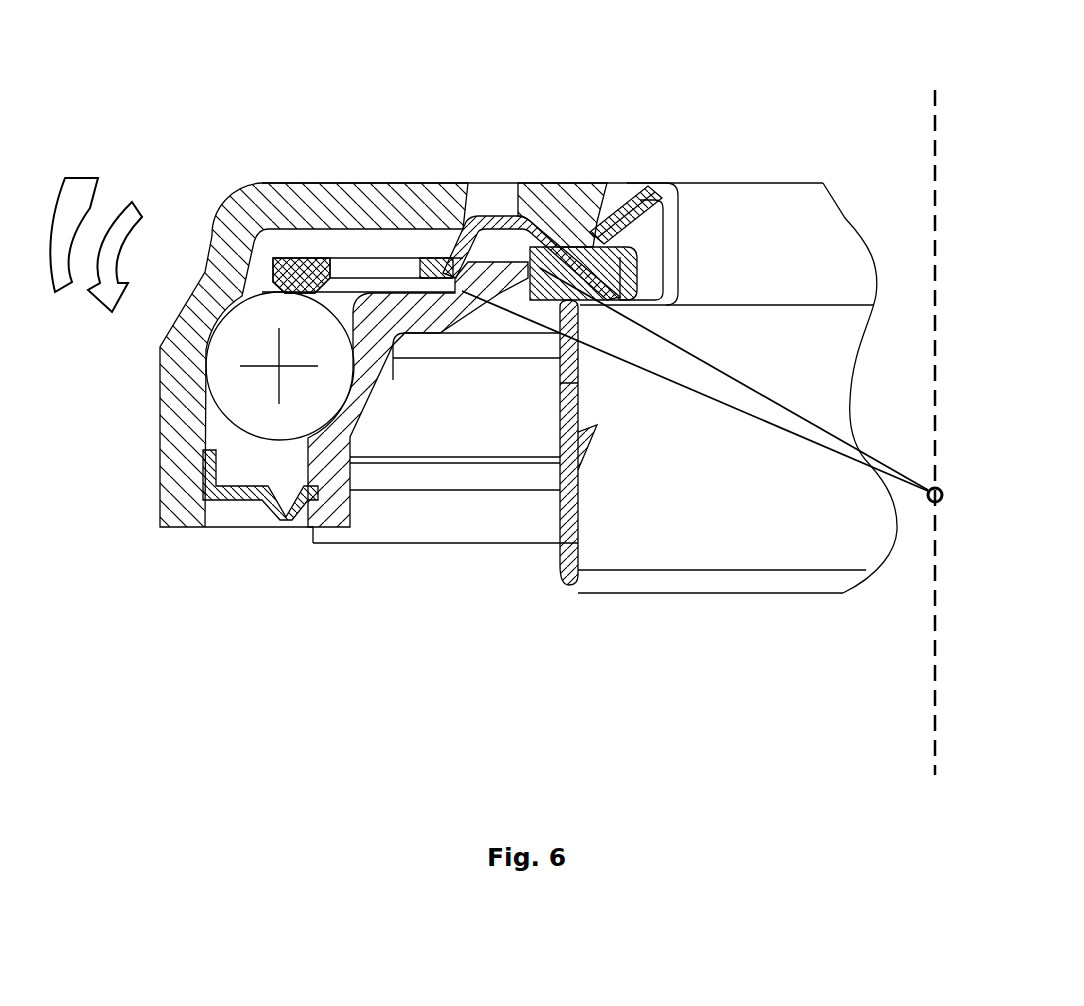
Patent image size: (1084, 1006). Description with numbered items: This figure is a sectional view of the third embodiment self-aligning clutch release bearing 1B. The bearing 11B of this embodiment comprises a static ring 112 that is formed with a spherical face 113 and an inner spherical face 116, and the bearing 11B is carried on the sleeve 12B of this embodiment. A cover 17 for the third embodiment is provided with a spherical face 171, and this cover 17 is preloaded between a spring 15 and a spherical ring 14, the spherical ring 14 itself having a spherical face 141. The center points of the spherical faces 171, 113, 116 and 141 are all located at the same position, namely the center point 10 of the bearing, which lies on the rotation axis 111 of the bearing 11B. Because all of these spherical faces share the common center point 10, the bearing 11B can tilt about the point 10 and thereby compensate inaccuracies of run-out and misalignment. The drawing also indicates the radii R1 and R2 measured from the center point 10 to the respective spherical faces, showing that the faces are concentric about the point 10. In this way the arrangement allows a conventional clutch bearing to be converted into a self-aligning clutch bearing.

The third embodiment self-aligning clutch release bearing 1B is at (177, 165).
The bearing for third embodiment 11B is at (188, 566).
The static ring of bearing 112 is at (319, 530).
The spherical face of static ring 113 is at (453, 296).
The inner spherical face of static ring 116 is at (518, 308).
The sleeve of third embodiment 12B is at (562, 587).
The center point of bearing 10 is at (915, 495).
The rotation axis of bearing 111 is at (921, 624).
The radius R1 is at (697, 394).
The radius R2 is at (729, 376).
The cover for third embodiment 17 is at (520, 212).
The spherical face of cover 171 is at (446, 245).
The spring 15 is at (601, 213).
The spherical ring 14 is at (586, 265).
The spherical face of ring 141 is at (528, 285).